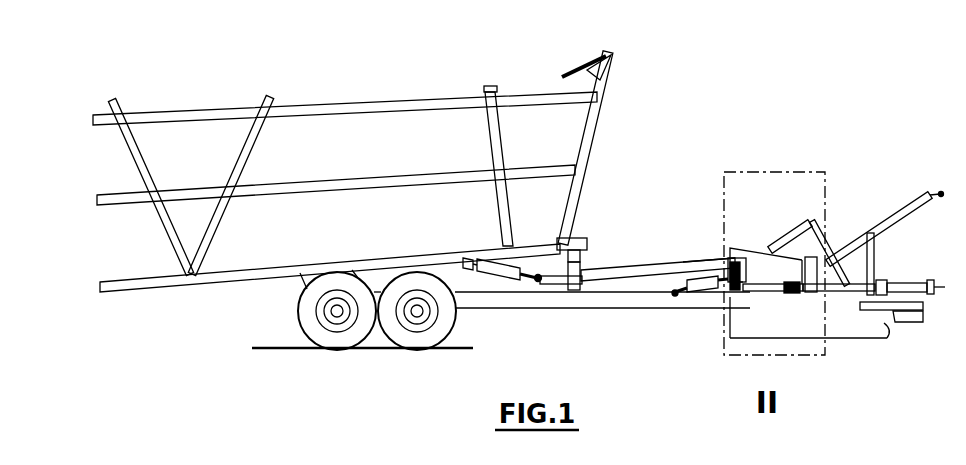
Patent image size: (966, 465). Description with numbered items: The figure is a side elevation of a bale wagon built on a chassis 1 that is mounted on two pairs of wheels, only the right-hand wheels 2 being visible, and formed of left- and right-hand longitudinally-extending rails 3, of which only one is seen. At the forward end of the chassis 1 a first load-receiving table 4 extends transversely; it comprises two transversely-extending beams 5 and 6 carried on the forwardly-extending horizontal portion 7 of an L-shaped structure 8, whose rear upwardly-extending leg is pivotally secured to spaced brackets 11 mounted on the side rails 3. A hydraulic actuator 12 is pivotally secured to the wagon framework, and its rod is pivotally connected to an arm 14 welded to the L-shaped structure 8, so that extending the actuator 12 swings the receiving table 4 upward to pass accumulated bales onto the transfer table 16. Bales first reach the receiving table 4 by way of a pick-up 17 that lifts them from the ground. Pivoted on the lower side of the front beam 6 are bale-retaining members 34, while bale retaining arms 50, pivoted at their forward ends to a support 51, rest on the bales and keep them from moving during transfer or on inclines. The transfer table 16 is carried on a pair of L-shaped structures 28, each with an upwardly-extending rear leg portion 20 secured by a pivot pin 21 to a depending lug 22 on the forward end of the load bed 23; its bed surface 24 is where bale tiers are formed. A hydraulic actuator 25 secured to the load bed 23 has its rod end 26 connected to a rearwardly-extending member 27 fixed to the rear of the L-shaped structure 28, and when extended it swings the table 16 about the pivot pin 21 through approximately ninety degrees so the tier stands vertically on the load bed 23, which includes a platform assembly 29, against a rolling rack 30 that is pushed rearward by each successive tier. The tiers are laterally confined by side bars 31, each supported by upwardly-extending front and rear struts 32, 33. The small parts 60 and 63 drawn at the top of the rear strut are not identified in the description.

The chassis 1 is at (613, 315).
The wheels 2 is at (366, 352).
The longitudinally-extending rails 3 is at (629, 310).
The receiving table 4 is at (826, 300).
The transversely-extending beam 5 is at (757, 250).
The front transverse beam 6 is at (812, 221).
The forwardly-extending horizontal portion 7 is at (795, 293).
The L-shaped structure 8 is at (747, 293).
The brackets 11 is at (727, 292).
The hydraulic actuator 12 is at (706, 289).
The arm 14 is at (716, 292).
The transfer table 16 is at (688, 263).
The pick-up 17 is at (875, 325).
The upwardly-extending rear leg portion 20 is at (592, 272).
The pivot pin 21 is at (583, 262).
The depending lug 22 is at (581, 258).
The load bed 23 is at (587, 240).
The bed surface 24 is at (726, 262).
The hydraulic actuator 25 is at (511, 277).
The rod end 26 is at (531, 284).
The rearwardly-extending member 27 is at (565, 285).
The L-shaped structures 28 is at (677, 293).
The platform assembly 29 is at (390, 262).
The rolling rack 30 is at (500, 147).
The side bars 31 is at (357, 118).
The front strut 32 is at (598, 127).
The rear strut 33 is at (146, 176).
The bale-retaining members 34 is at (788, 294).
The bale retaining arms 50 is at (777, 250).
The support 51 is at (829, 233).
The lever 60 is at (603, 50).
The latch 63 is at (609, 70).